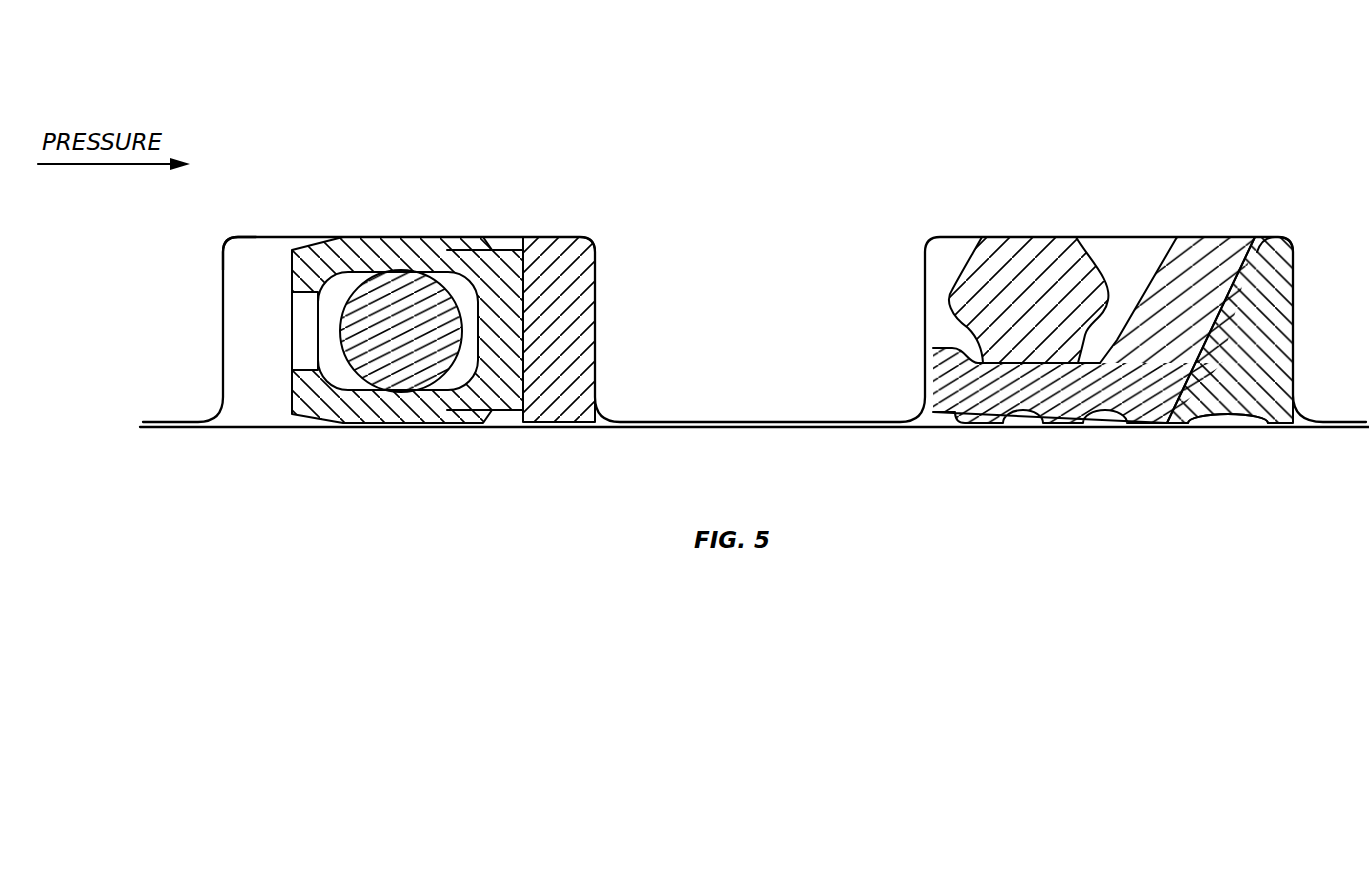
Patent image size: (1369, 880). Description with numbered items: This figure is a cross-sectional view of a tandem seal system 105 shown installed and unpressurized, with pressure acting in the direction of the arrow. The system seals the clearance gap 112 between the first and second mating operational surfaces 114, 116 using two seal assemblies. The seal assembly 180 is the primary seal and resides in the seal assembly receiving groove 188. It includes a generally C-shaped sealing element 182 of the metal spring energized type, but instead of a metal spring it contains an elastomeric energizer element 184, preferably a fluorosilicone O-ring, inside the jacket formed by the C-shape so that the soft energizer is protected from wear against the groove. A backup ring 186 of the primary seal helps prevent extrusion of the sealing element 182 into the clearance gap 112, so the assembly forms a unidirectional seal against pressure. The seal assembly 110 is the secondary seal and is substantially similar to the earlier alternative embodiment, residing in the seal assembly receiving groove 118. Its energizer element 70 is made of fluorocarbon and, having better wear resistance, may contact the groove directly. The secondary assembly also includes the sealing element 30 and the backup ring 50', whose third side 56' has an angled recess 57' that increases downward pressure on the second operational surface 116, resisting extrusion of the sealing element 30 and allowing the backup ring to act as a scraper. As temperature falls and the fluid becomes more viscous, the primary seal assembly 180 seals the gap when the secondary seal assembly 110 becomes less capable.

The tandem seal system 105 is at (1098, 63).
The seal assembly 110 is at (1039, 222).
The clearance gap 112 is at (124, 422).
The first operational surface 114 is at (143, 422).
The second operational surface 116 is at (141, 428).
The seal assembly receiving groove 188 is at (228, 248).
The seal assembly 180 is at (377, 216).
The sealing element 182 is at (488, 248).
The energizer element 184 is at (360, 298).
The backup ring 186 is at (557, 245).
The energizer element 70 is at (1010, 247).
The seal assembly receiving groove 118 is at (1128, 240).
The sealing element 30 is at (1072, 414).
The backup ring 50' is at (1264, 330).
The third side 56' is at (1256, 457).
The recess 57' is at (1208, 457).